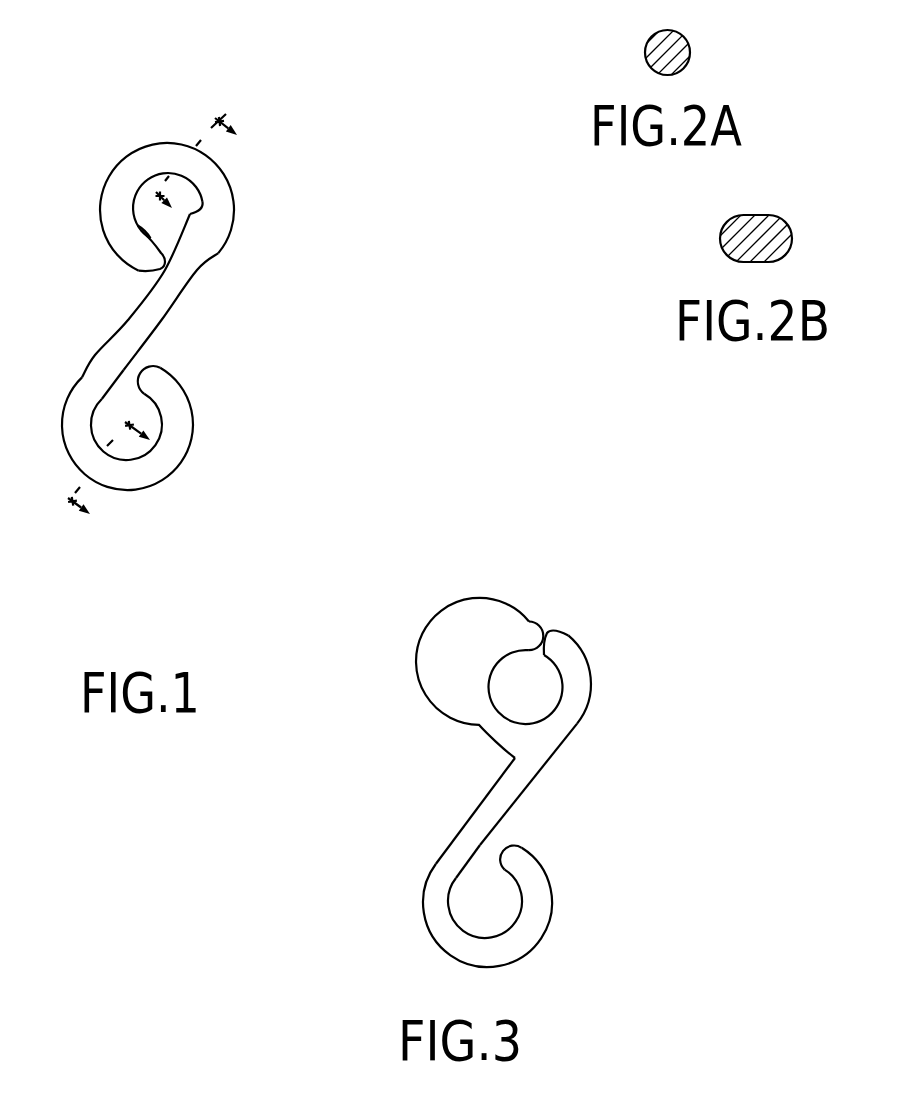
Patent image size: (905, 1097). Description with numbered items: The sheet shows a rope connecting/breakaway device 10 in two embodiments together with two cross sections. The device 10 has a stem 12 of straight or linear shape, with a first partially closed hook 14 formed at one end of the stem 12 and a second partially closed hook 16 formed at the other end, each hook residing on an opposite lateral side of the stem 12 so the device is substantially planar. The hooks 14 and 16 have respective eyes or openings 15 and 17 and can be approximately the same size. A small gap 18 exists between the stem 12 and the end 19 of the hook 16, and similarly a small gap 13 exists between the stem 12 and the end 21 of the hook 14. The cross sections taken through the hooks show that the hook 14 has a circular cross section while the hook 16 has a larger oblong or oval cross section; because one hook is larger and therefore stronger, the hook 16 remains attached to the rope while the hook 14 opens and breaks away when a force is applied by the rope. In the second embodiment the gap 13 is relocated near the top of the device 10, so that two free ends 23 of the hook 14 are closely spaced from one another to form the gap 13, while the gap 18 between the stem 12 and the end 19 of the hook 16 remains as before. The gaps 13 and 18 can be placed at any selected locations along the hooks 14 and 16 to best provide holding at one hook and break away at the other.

In FIG. 1, the rope connecting/breakaway device 10 is at (305, 205).
In FIG. 3, the rope connecting/breakaway device 10 is at (690, 670).
In FIG. 1, the stem 12 is at (140, 323).
In FIG. 3, the stem 12 is at (482, 817).
In FIG. 1, the gap 13 is at (147, 282).
In FIG. 3, the gap 13 is at (550, 623).
In FIG. 1, the first partially closed hook 14 is at (133, 172).
In FIG. 2A, the first partially closed hook 14 is at (690, 42).
In FIG. 3, the first partially closed hook 14 is at (475, 682).
In FIG. 1, the eye or opening 15 is at (130, 236).
In FIG. 1, the second partially closed hook 16 is at (148, 468).
In FIG. 2B, the second partially closed hook 16 is at (792, 228).
In FIG. 3, the second partially closed hook 16 is at (527, 932).
In FIG. 1, the eye or opening 17 is at (150, 425).
In FIG. 1, the gap 18 is at (140, 366).
In FIG. 3, the gap 18 is at (497, 840).
In FIG. 1, the end 19 is at (155, 380).
In FIG. 3, the end 19 is at (515, 857).
In FIG. 1, the end 21 is at (193, 204).
In FIG. 3, the free ends 23 is at (505, 632).